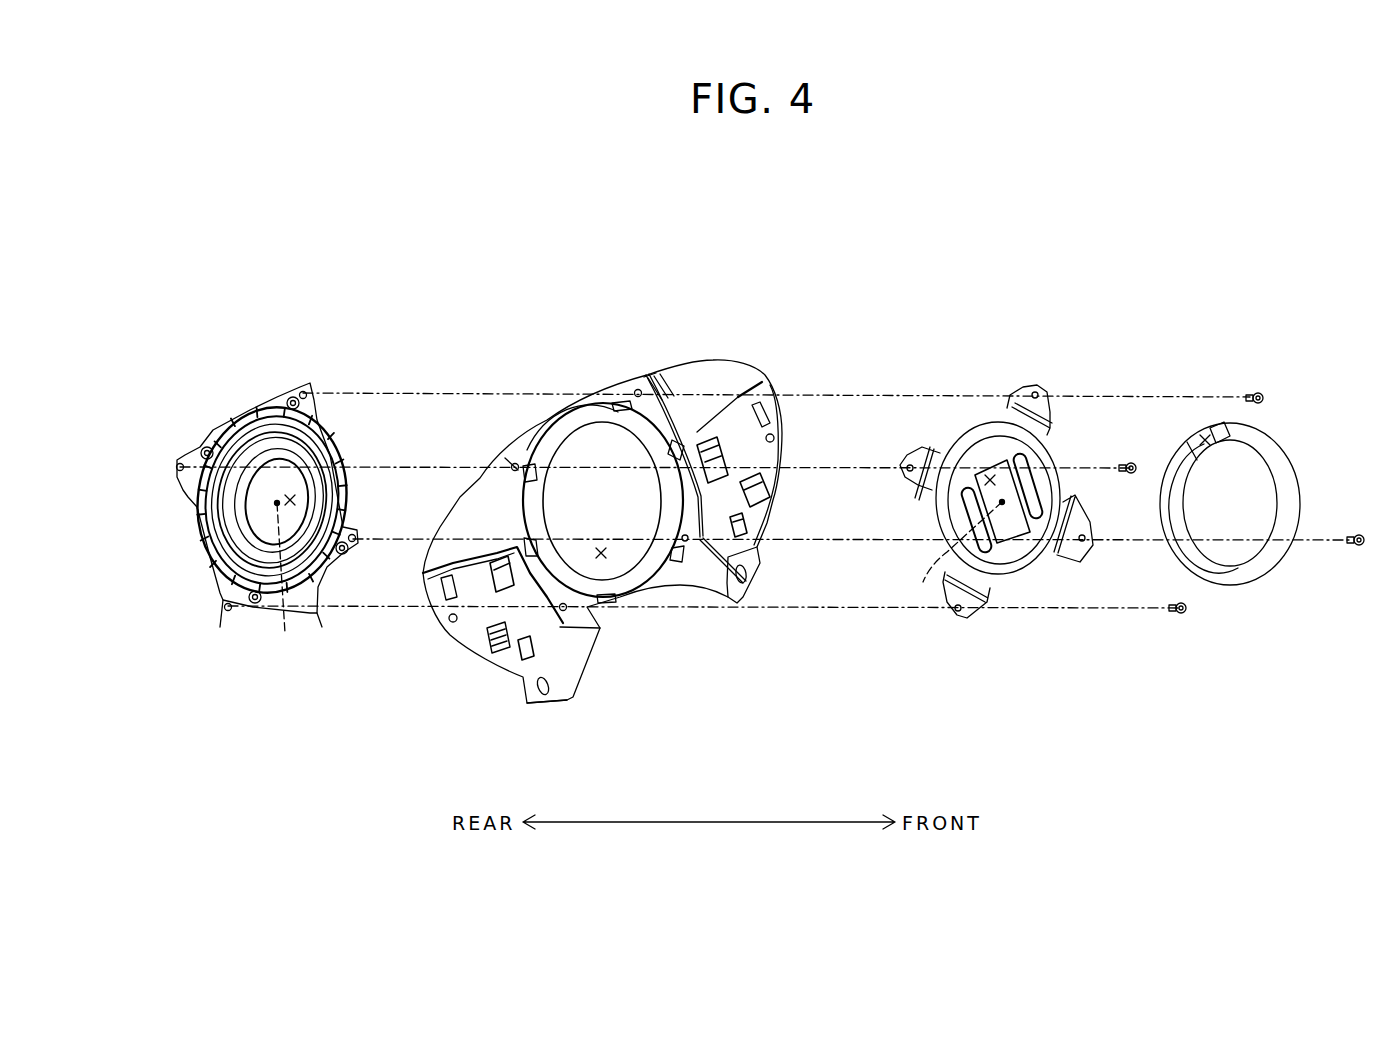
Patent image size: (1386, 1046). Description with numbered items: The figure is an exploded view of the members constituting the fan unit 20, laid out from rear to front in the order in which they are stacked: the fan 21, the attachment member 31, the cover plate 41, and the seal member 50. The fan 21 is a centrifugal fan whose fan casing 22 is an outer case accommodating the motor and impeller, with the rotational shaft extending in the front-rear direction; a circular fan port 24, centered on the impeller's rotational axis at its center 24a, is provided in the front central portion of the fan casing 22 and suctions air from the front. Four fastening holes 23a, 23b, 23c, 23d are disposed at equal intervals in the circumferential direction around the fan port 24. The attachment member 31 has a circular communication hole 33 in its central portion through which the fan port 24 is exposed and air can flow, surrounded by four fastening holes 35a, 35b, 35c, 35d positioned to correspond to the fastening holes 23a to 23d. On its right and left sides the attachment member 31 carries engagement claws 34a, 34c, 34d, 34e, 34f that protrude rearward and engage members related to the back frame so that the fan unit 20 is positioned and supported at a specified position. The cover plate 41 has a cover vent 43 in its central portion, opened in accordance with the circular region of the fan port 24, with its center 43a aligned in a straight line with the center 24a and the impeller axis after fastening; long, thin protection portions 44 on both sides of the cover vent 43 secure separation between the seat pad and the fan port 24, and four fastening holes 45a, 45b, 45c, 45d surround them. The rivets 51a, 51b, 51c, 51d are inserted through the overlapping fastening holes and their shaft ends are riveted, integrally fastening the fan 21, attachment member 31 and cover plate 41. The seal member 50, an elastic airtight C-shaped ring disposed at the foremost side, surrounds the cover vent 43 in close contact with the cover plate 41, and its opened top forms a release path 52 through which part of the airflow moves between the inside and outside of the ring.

The fan unit 20 is at (790, 259).
The fan 21 is at (221, 392).
The fan casing 22 is at (313, 580).
The fastening hole 23a is at (306, 388).
The fastening hole 23b is at (360, 541).
The fastening hole 23c is at (223, 629).
The fastening hole 23d is at (172, 456).
The fan port 24 is at (298, 500).
The center of the fan port 24a is at (279, 582).
The attachment member 31 is at (687, 378).
The communication hole 33 is at (602, 560).
The engagement claw 34a is at (766, 412).
The engagement claw 34c is at (765, 492).
The engagement claw 34d is at (712, 460).
The engagement claw 34e is at (490, 580).
The engagement claw 34f is at (497, 652).
The fastening hole 35a is at (638, 380).
The fastening hole 35b is at (686, 545).
The fastening hole 35c is at (567, 610).
The fastening hole 35d is at (511, 462).
The cover plate 41 is at (1015, 430).
The cover vent 43 is at (990, 475).
The center of the cover vent 43a is at (949, 550).
The protection portion 44 is at (966, 508).
The fastening hole 45a is at (1043, 392).
The fastening hole 45b is at (1084, 541).
The fastening hole 45c is at (958, 611).
The fastening hole 45d is at (912, 462).
The seal member 50 is at (1280, 445).
The rivet 51a is at (1260, 394).
The rivet 51b is at (1359, 546).
The rivet 51c is at (1181, 614).
The rivet 51d is at (1132, 463).
The release path 52 is at (1205, 438).